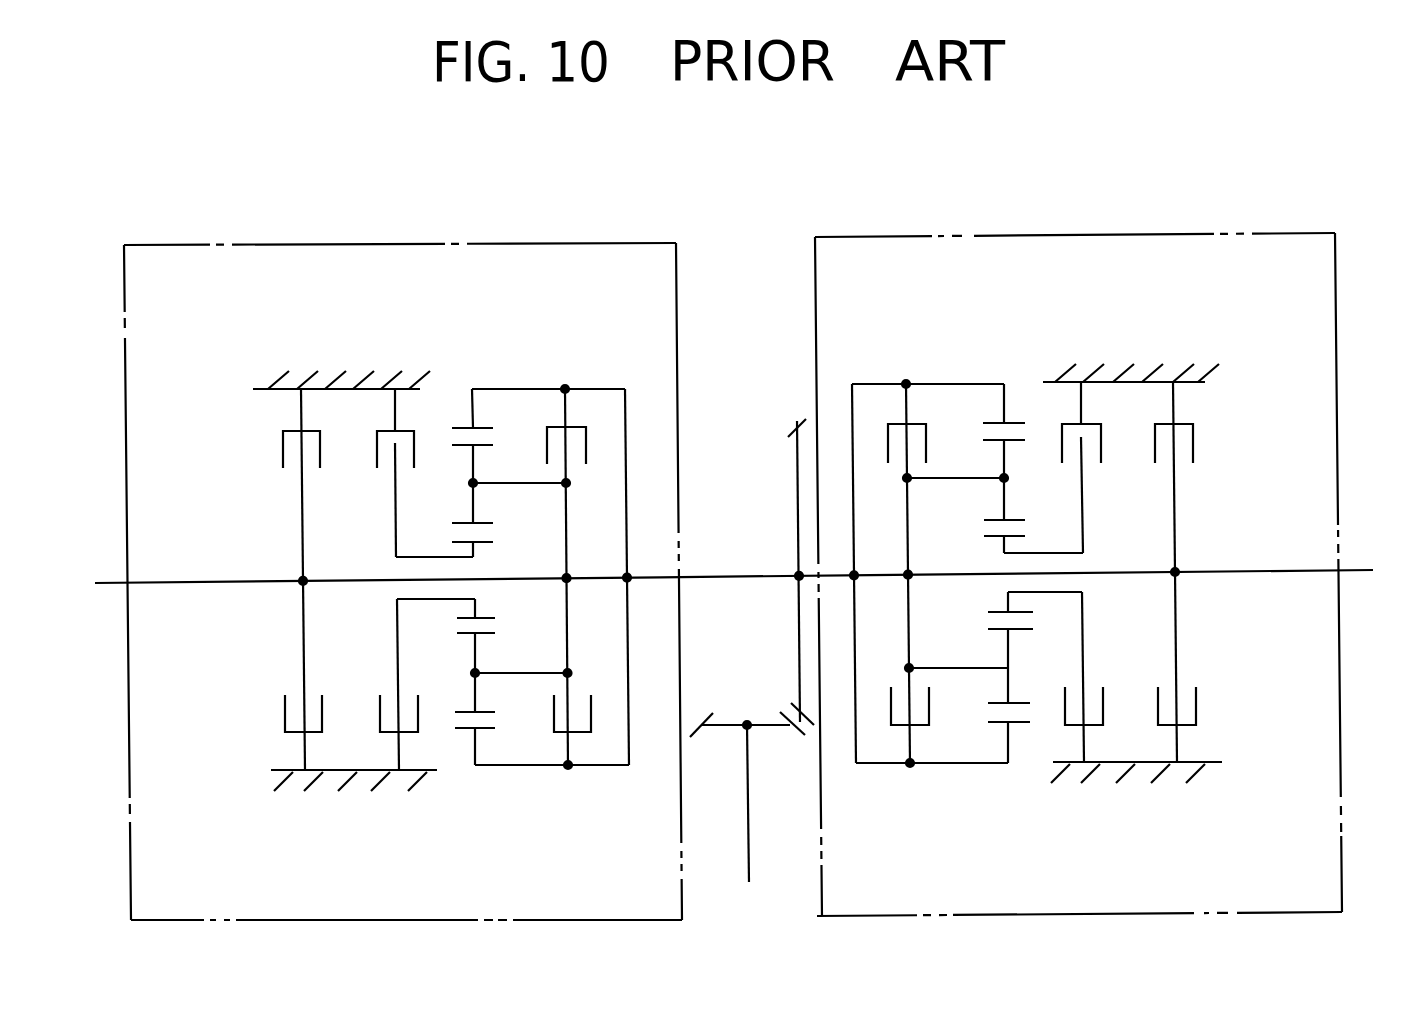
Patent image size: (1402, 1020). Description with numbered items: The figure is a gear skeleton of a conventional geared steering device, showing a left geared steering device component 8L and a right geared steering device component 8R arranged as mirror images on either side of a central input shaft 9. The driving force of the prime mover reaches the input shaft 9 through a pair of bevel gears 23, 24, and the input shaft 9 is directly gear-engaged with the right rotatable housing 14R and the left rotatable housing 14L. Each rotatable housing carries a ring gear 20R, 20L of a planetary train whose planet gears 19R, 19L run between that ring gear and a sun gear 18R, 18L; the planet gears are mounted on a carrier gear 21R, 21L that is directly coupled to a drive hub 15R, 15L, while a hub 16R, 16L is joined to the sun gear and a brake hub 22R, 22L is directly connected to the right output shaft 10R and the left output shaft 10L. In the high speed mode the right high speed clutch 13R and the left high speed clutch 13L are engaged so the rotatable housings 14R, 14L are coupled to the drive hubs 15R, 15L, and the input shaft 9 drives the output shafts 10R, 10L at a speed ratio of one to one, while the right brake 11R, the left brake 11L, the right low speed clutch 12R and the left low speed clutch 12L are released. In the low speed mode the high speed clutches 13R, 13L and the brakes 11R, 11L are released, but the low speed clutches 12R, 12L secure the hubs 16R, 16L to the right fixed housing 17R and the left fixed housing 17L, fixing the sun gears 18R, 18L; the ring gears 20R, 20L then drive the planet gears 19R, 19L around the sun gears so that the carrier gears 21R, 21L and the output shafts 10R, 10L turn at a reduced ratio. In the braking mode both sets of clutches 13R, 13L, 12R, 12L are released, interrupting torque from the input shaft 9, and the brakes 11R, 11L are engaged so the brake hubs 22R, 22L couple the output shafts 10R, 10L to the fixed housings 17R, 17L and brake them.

The left geared steering device component 8L is at (487, 244).
The right geared steering device component 8R is at (1033, 236).
The input shaft 9 is at (745, 578).
The left output shaft 10L is at (215, 582).
The right output shaft 10R is at (1268, 572).
The left brake 11L is at (283, 445).
The right brake 11R is at (1194, 437).
The left low speed clutch 12L is at (378, 713).
The right low speed clutch 12R is at (1106, 700).
The left high speed clutch 13L is at (592, 710).
The right high speed clutch 13R is at (895, 708).
The left rotatable housing 14L is at (609, 389).
The right rotatable housing 14R is at (888, 384).
The left drive hub 15L is at (566, 519).
The right drive hub 15R is at (911, 527).
The left hub 16L is at (433, 557).
The right hub 16R is at (1043, 553).
The left fixed housing 17L is at (322, 389).
The right fixed housing 17R is at (1135, 382).
The left sun gear 18L is at (488, 620).
The right sun gear 18R is at (988, 620).
The left planet gears 19L is at (482, 712).
The right planet gears 19R is at (988, 705).
The left ring gear 20L is at (452, 728).
The right ring gear 20R is at (1033, 722).
The left carrier gear 21L is at (522, 482).
The right carrier gear 21R is at (960, 478).
The left brake hub 22L is at (302, 492).
The right brake hub 22R is at (1176, 495).
The bevel gear 23 is at (748, 822).
The bevel gear 24 is at (798, 496).